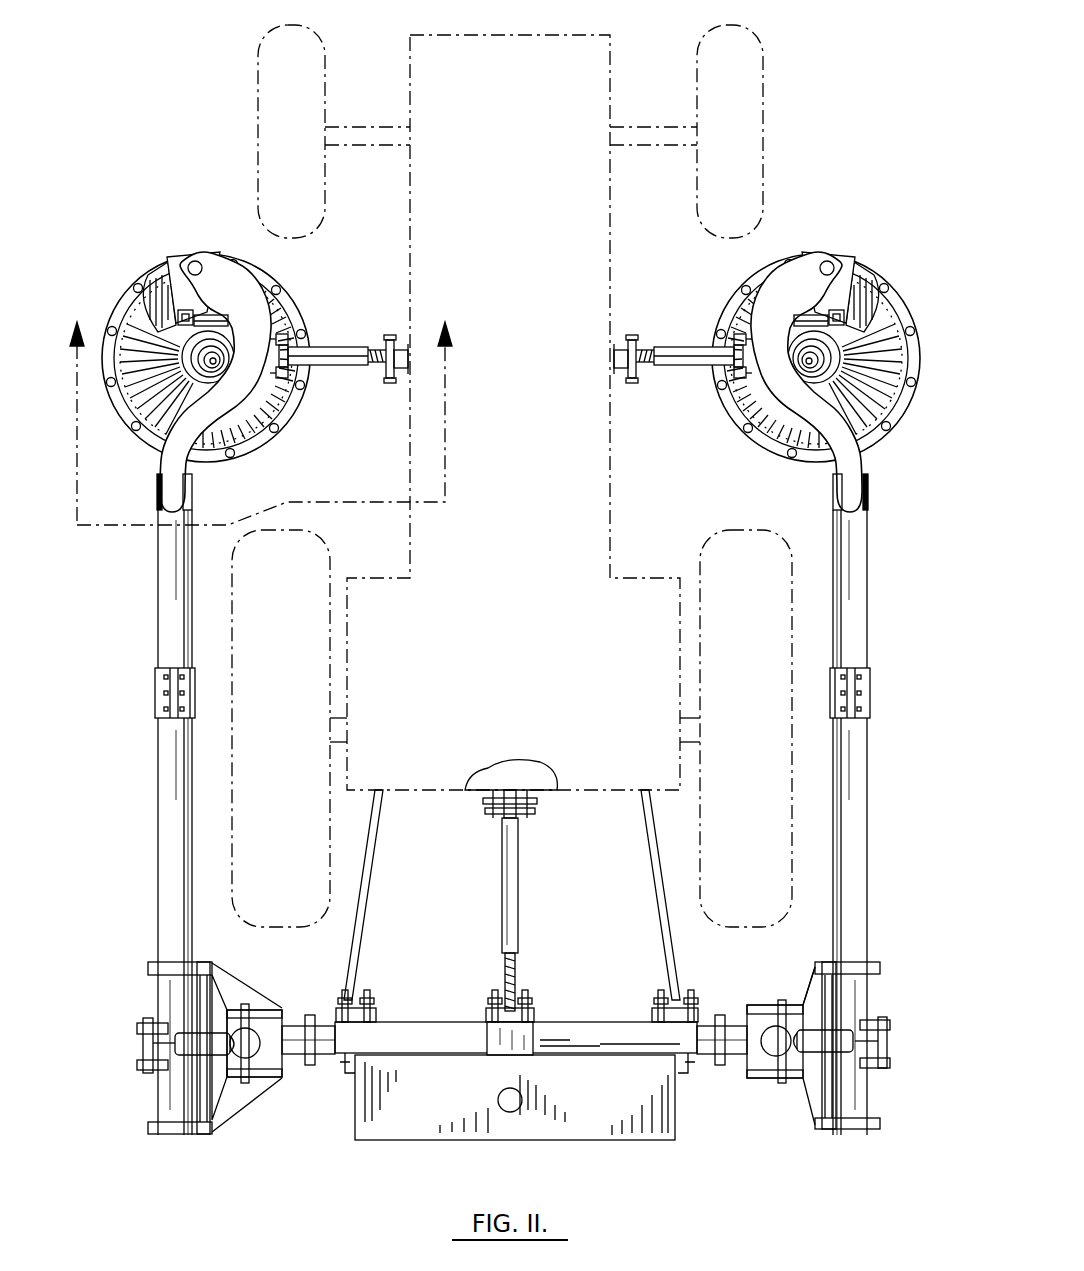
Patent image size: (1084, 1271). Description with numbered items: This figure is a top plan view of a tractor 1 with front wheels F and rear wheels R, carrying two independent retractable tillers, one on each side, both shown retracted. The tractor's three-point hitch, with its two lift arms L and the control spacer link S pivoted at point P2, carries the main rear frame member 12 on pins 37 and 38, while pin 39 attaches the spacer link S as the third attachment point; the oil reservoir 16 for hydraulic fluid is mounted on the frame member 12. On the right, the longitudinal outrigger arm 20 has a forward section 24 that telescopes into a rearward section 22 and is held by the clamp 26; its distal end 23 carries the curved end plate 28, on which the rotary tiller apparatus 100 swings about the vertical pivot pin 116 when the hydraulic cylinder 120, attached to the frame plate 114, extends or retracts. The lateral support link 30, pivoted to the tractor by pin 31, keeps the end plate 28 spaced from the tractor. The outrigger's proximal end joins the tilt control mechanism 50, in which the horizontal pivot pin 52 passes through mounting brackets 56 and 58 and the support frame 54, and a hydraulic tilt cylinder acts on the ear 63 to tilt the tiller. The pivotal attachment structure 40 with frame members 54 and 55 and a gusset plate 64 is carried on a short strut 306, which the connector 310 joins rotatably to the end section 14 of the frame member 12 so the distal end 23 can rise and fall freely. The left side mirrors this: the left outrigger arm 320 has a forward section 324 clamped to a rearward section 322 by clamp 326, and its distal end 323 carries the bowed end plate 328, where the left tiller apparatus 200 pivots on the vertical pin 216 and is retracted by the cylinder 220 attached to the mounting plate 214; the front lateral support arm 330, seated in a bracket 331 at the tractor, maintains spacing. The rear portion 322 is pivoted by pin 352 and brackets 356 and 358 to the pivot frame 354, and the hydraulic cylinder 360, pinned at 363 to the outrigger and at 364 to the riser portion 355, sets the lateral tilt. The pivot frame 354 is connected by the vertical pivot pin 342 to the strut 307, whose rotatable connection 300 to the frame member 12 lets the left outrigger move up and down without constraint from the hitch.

The tractor 1 is at (541, 36).
The front wheels F is at (258, 150).
The rear wheels R is at (295, 532).
The lift arms L is at (365, 905).
The control spacer link S is at (518, 910).
The spacer link attachment point P2 is at (490, 808).
The main rear frame member 12 is at (605, 1022).
The end section 14 is at (690, 990).
The oil reservoir 16 is at (495, 1140).
The longitudinal outrigger arm 20 is at (881, 793).
The rearward section 22 is at (867, 810).
The distal end 23 is at (868, 478).
The forward section 24 is at (867, 575).
The clamp 26 is at (868, 692).
The end plate 28 is at (770, 450).
The lateral support link 30 is at (700, 346).
The pivot pin 31 is at (630, 385).
The pin 37 is at (374, 998).
The pin 38 is at (655, 990).
The pin 39 is at (534, 998).
The pivotal attachment structure 40 is at (751, 1024).
The tilt control mechanism 50 is at (855, 1054).
The horizontal pivot pin 52 is at (830, 1130).
The support frame 54 is at (808, 1122).
The frame member 55 is at (806, 1003).
The mounting bracket 56 is at (865, 1130).
The mounting bracket 58 is at (870, 962).
The ear 63 is at (890, 1024).
The gusset plate 64 is at (815, 962).
The rotary tiller apparatus 100 is at (786, 355).
The frame plate 114 is at (880, 300).
The vertical pivot pin 116 is at (826, 262).
The hydraulic cylinder 120 is at (850, 262).
The left tiller apparatus 200 is at (279, 355).
The mounting plate 214 is at (170, 265).
The vertical pin 216 is at (195, 262).
The cylinder 220 is at (246, 272).
The rotatable connection 300 is at (300, 1062).
The short strut 306 is at (745, 1012).
The strut 307 is at (310, 1015).
The connector 310 is at (720, 1066).
The left outrigger arm 320 is at (138, 804).
The rearward section 322 is at (158, 835).
The distal end 323 is at (157, 503).
The forward section 324 is at (158, 625).
The clamp 326 is at (155, 706).
The end plate 328 is at (260, 466).
The front lateral support arm 330 is at (330, 366).
The shaft bracket 331 is at (395, 336).
The vertical pivot pin 342 is at (235, 1085).
The pivot pin 352 is at (205, 1134).
The pivot frame 354 is at (235, 1130).
The riser portion 355 is at (282, 1010).
The bracket 356 is at (172, 1134).
The bracket 358 is at (150, 962).
The hydraulic cylinder 360 is at (195, 1038).
The pin 363 is at (137, 1028).
The pin 364 is at (252, 1008).